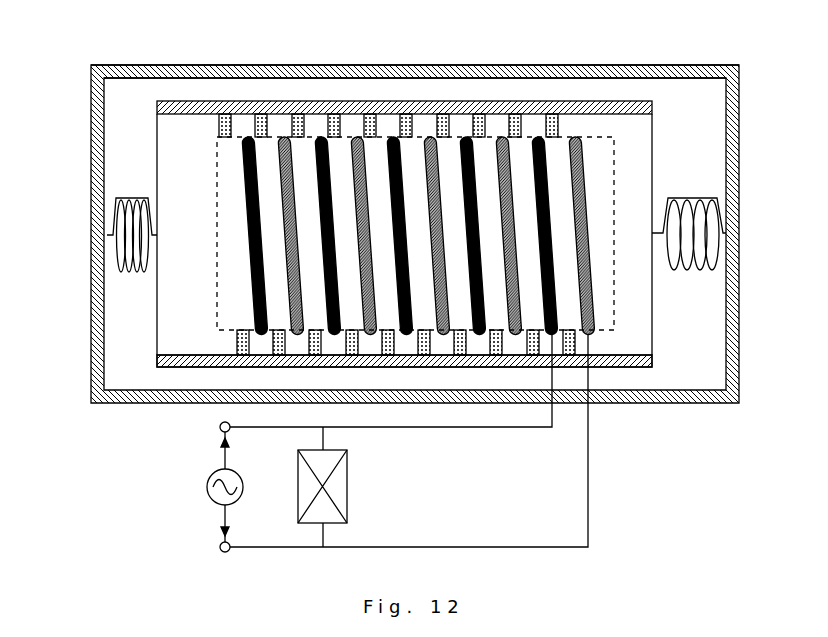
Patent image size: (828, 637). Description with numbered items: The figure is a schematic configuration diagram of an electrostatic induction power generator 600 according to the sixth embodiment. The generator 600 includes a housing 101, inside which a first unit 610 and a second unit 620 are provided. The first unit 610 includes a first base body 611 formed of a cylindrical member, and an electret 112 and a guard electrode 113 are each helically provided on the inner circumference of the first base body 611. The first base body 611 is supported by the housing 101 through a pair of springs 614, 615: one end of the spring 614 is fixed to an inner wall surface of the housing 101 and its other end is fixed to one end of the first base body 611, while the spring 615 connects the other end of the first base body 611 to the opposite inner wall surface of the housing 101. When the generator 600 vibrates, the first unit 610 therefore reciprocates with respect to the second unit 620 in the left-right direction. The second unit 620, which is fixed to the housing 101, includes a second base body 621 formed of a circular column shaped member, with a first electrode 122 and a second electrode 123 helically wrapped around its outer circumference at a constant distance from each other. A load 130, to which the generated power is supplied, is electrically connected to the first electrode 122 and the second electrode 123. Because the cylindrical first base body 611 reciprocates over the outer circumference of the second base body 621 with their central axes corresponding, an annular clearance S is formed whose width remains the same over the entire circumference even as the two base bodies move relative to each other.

The electrostatic induction power generator 600 is at (693, 43).
The first unit 610 is at (676, 367).
The housing 101 is at (456, 67).
The second unit 620 is at (636, 160).
The first base body 611 is at (180, 368).
The second base body 621 is at (598, 150).
The annular clearance S is at (206, 128).
The electret 112 is at (219, 128).
The guard electrode 113 is at (266, 129).
The first electrode 122 is at (253, 261).
The second electrode 123 is at (288, 284).
The spring 614 is at (112, 215).
The spring 615 is at (723, 212).
The load 130 is at (342, 487).